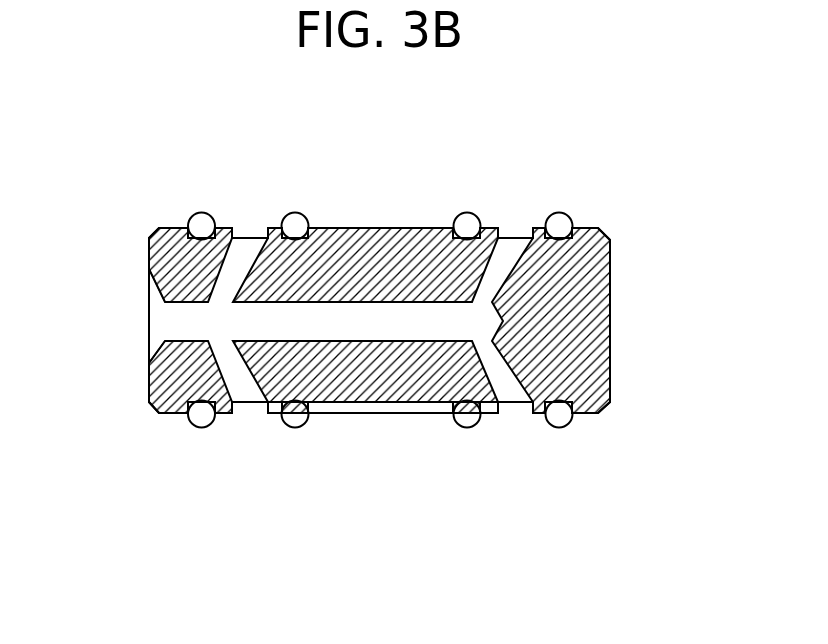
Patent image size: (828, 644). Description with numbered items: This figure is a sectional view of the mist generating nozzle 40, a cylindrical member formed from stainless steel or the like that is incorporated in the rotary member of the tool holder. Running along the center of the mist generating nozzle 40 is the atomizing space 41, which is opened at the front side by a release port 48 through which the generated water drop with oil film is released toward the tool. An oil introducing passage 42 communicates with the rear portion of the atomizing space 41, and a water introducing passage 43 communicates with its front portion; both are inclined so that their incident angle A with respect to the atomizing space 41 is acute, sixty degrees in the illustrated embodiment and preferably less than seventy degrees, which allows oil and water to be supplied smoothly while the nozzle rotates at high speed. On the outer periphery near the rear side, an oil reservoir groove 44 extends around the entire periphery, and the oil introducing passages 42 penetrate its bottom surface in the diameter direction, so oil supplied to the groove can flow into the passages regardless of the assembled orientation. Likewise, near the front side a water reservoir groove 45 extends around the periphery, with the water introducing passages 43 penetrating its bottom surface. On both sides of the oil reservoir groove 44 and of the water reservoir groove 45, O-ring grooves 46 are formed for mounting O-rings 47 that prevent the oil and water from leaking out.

The mist generating nozzle 40 is at (393, 230).
The atomizing space 41 is at (383, 321).
The oil introducing passage 42 is at (498, 275).
The water introducing passage 43 is at (222, 282).
The oil reservoir groove 44 is at (532, 239).
The water reservoir groove 45 is at (266, 239).
The O-ring groove 46 is at (562, 216).
The O-ring 47 is at (199, 214).
The release port 48 is at (148, 312).
The incident angle A is at (250, 293).